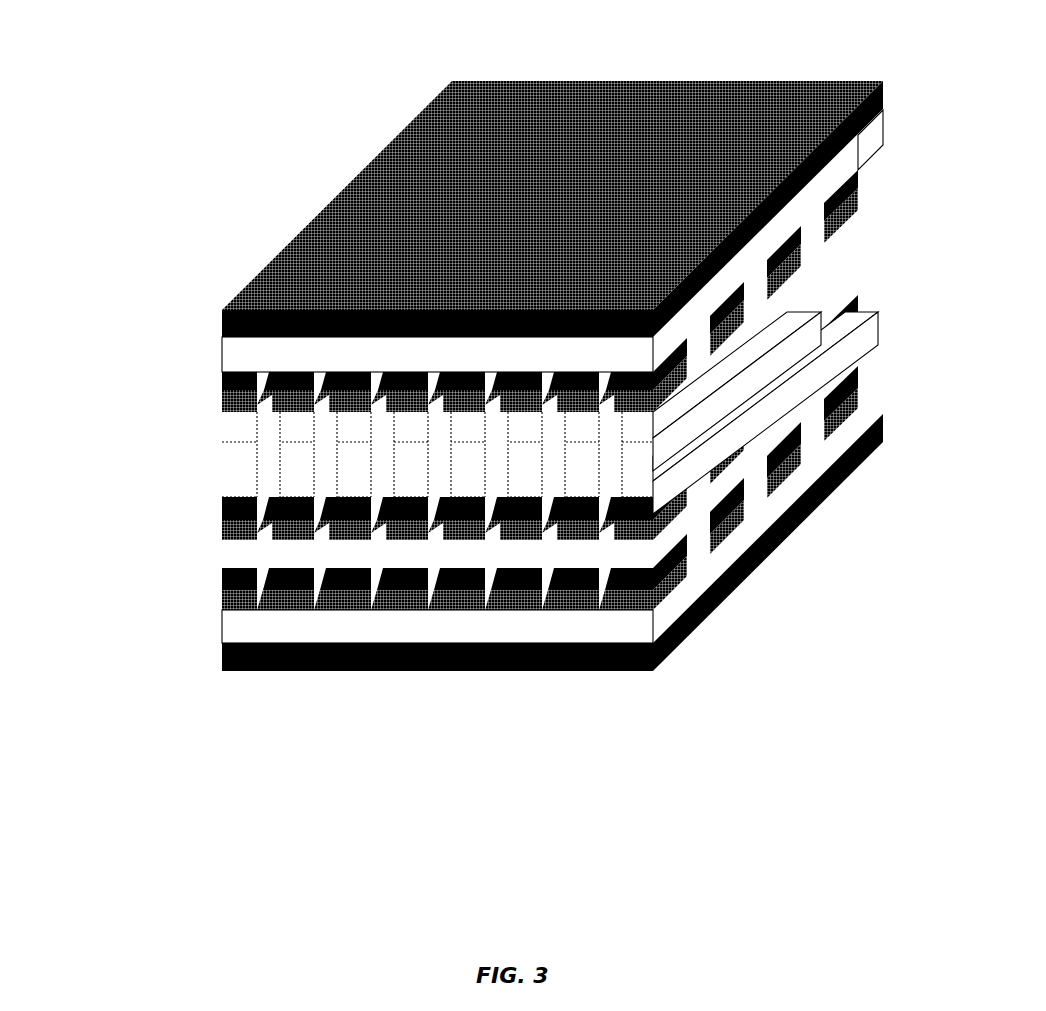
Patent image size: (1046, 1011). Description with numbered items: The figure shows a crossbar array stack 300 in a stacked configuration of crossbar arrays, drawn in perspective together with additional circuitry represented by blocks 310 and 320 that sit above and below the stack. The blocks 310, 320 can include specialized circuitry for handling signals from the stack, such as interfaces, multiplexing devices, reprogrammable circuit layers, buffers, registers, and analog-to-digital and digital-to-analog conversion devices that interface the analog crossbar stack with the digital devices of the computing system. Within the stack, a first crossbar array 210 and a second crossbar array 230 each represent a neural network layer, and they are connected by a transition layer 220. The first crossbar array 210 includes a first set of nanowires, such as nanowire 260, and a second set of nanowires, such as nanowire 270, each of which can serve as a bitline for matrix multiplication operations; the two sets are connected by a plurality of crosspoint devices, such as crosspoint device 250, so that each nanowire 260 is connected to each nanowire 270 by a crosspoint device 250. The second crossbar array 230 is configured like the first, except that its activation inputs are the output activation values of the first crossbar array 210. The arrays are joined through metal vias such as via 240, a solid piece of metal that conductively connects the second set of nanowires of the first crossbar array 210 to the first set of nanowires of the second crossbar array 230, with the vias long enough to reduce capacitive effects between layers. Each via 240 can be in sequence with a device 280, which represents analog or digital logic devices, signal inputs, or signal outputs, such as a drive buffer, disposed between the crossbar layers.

The crossbar array stack 300 is at (503, 343).
The block 310 is at (830, 81).
The block 320 is at (708, 615).
The first crossbar array 210 is at (210, 442).
The transition layer 220 is at (348, 491).
The second crossbar array 230 is at (210, 660).
The via 240 is at (227, 473).
The crosspoint device 250 is at (886, 347).
The nanowire 260 is at (872, 204).
The nanowire 270 is at (876, 128).
The device 280 is at (210, 537).